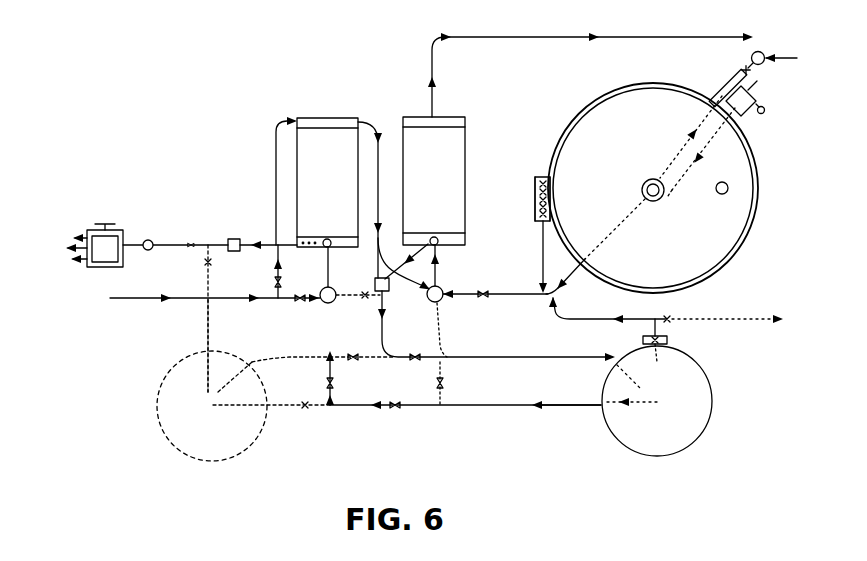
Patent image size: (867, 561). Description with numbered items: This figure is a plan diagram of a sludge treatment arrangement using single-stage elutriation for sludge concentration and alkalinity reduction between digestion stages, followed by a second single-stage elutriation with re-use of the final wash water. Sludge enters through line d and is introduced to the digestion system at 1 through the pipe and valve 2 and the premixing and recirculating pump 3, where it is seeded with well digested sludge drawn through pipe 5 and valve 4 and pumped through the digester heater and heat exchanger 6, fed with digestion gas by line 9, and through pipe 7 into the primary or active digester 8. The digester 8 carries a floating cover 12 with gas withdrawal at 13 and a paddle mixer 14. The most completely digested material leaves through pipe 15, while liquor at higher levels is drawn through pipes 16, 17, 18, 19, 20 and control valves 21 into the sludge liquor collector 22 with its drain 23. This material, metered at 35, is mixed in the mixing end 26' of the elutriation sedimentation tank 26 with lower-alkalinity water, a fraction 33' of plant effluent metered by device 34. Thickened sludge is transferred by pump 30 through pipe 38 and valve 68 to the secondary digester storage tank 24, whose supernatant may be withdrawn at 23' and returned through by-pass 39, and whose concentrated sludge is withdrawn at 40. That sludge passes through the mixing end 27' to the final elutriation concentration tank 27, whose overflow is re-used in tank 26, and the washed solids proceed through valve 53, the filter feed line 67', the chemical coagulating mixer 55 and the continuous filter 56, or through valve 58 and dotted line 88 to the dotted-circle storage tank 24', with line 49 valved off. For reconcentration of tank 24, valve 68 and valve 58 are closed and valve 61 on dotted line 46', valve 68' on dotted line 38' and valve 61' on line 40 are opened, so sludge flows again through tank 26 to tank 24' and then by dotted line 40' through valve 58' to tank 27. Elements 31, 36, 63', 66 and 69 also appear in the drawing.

The digestion system inlet 1 is at (762, 66).
The sludge removal line d is at (781, 49).
The pipe and valve 2 is at (743, 60).
The premixing and recirculating pump 3 is at (748, 98).
The valve 4 is at (734, 72).
The pipe 5 is at (691, 137).
The digester heater and heat exchanger 6 is at (760, 119).
The pipe 7 is at (706, 152).
The primary or active digester 8 is at (750, 240).
The gas line 9 is at (667, 180).
The floating cover 12 is at (653, 188).
The gas withdrawal 13 is at (655, 201).
The paddle mixer 14 is at (728, 190).
The bottom withdrawal pipe 15 is at (595, 246).
The sludge liquor withdrawal pipe 16 is at (549, 184).
The sludge liquor withdrawal pipe 17 is at (549, 192).
The sludge liquor withdrawal pipe 18 is at (549, 200).
The sludge liquor withdrawal pipe 19 is at (549, 207).
The sludge liquor withdrawal pipe 20 is at (549, 214).
The control valves 21 is at (534, 192).
The sludge liquor collector 22 is at (535, 189).
The drain 23 is at (534, 257).
The secondary supernatant withdrawal 23' is at (608, 310).
The secondary digester storage tank 24 is at (673, 401).
The final secondary digester or storage tank 24' is at (193, 406).
The elutriation sedimentation tank 26 is at (434, 181).
The mixing end 26' is at (426, 280).
The final elutriation concentration tank 27 is at (327, 182).
The mixing end of tank 27 27' is at (316, 275).
The pump 30 is at (374, 284).
The valve 31 is at (234, 238).
The treatment plant effluent fraction 33' is at (215, 290).
The metering device 34 is at (298, 305).
The metering device and valve 35 is at (495, 284).
The exhaust line 36 is at (590, 64).
The pipe 38 is at (496, 326).
The dotted line 38' is at (323, 349).
The by-pass 39 is at (723, 309).
The withdrawal line 40 is at (570, 393).
The dotted line 40' is at (271, 427).
The dotted line 46' is at (452, 354).
The line 49 is at (278, 207).
The valve 53 is at (185, 235).
The chemical coagulating mixer 55 is at (175, 236).
The continuous filter 56 is at (94, 255).
The valve 58 is at (403, 334).
The valve 58' is at (304, 413).
The valve 61 is at (455, 383).
The valve 61' is at (317, 378).
The valve 63' is at (358, 303).
The line 66 is at (395, 198).
The filter feed line 67' is at (268, 236).
The valve 68 is at (413, 345).
The valve 68' is at (351, 345).
The valve 69 is at (268, 282).
The dotted line 88 is at (220, 346).